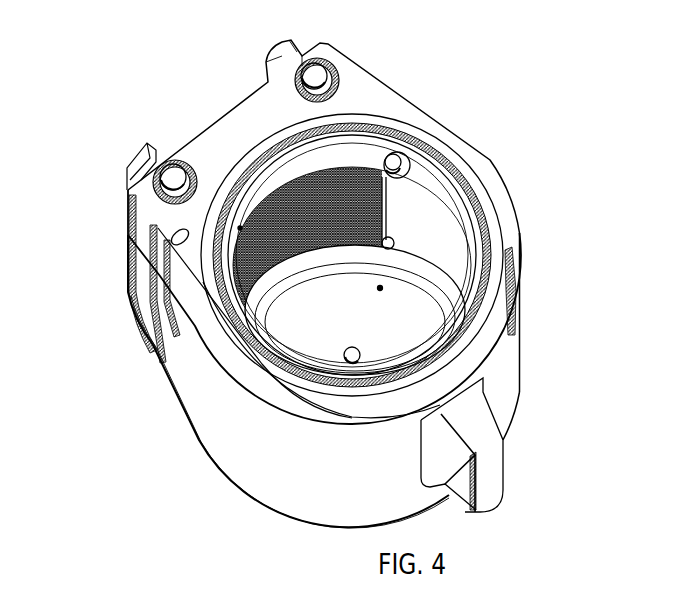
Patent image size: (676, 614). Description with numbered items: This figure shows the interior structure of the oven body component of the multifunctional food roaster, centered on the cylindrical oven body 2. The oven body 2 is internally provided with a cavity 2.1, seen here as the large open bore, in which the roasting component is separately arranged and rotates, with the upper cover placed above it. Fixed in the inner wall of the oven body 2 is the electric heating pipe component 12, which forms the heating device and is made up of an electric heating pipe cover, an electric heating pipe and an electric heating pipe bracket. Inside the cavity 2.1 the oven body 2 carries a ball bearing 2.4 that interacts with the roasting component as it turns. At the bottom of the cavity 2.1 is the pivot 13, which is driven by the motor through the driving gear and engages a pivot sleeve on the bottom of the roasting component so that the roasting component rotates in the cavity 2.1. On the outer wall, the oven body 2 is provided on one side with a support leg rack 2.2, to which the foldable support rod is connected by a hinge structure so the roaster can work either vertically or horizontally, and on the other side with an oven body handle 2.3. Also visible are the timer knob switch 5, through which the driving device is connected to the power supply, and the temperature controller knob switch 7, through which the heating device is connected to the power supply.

The oven body 2 is at (505, 357).
The cavity 2.1 is at (290, 337).
The support leg rack 2.2 is at (147, 157).
The oven body handle 2.3 is at (486, 460).
The ball bearing 2.4 is at (390, 168).
The timer knob switch 5 is at (318, 80).
The temperature controller knob switch 7 is at (176, 180).
The electric heating pipe component 12 is at (384, 194).
The pivot 13 is at (345, 358).